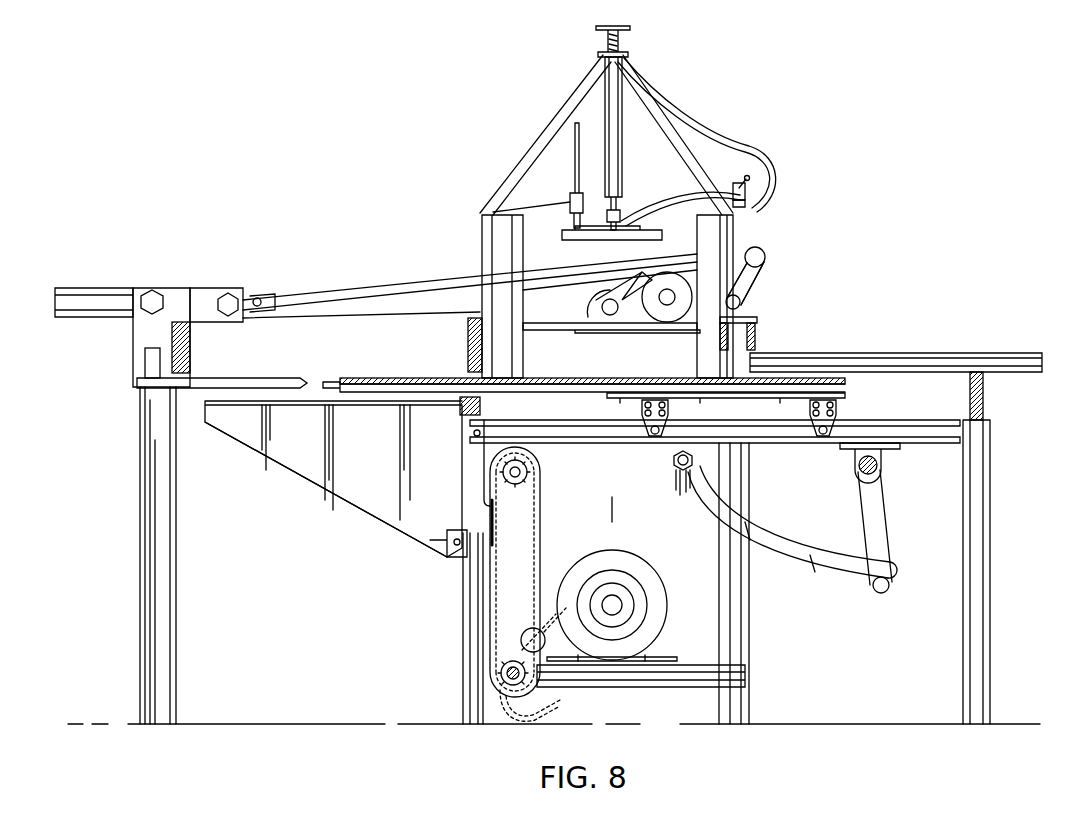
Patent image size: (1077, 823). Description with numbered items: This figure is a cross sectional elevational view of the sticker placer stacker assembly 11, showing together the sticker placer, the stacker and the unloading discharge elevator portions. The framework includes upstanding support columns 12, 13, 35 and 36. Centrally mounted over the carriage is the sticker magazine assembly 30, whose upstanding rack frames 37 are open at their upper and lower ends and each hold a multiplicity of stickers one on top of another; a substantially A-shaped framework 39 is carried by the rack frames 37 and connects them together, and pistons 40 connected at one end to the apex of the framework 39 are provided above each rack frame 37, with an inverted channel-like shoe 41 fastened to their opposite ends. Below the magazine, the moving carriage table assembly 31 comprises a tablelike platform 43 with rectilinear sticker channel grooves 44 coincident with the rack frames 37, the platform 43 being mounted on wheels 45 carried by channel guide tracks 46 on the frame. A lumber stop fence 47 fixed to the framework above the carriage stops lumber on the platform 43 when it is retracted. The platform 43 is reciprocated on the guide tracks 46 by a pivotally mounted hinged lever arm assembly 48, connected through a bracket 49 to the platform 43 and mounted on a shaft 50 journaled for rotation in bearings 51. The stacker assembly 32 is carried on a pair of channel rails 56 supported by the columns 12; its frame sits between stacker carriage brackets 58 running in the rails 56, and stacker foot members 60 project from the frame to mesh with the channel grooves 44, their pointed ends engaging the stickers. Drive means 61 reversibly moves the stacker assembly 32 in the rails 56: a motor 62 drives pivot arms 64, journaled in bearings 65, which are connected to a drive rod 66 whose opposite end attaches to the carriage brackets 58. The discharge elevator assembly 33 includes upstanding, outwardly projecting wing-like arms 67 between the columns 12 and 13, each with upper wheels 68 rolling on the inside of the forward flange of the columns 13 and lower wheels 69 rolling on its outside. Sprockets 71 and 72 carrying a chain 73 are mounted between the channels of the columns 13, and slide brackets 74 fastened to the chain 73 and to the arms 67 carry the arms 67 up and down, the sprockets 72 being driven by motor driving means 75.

The sticker placer stacker assembly 11 is at (620, 516).
The upstanding support column 12 is at (140, 543).
The upstanding support column 13 is at (462, 657).
The sticker magazine assembly 30 is at (553, 196).
The moving carriage table assembly 31 is at (755, 414).
The stacker assembly 32 is at (216, 305).
The discharge elevator assembly 33 is at (352, 478).
The upstanding support column 35 is at (749, 597).
The upstanding support column 36 is at (990, 545).
The rack frame 37 is at (482, 250).
The A-shaped framework 39 is at (657, 98).
The piston 40 is at (622, 150).
The inverted channel-like shoe 41 is at (620, 236).
The tablelike platform 43 is at (845, 385).
The sticker channel groove 44 is at (325, 382).
The wheel 45 is at (650, 437).
The channel guide track 46 is at (927, 422).
The lumber stop fence 47 is at (465, 353).
The hinged lever arm assembly 48 is at (832, 553).
The bracket 49 is at (680, 465).
The shaft 50 is at (858, 475).
The bearing 51 is at (880, 462).
The channel rail 56 is at (120, 288).
The stacker carriage bracket 58 is at (180, 288).
The stacker foot member 60 is at (258, 383).
The drive means 61 is at (752, 300).
The motor 62 is at (672, 322).
The pivot arm 64 is at (752, 282).
The bearing 65 is at (757, 312).
The drive rod 66 is at (425, 280).
The wing-like arm 67 is at (310, 483).
The wheel 68 is at (474, 433).
The wheel 69 is at (460, 548).
The sprocket 71 is at (528, 472).
The sprocket 72 is at (550, 710).
The chain 73 is at (545, 540).
The slide bracket 74 is at (505, 520).
The motor driving means 75 is at (660, 607).